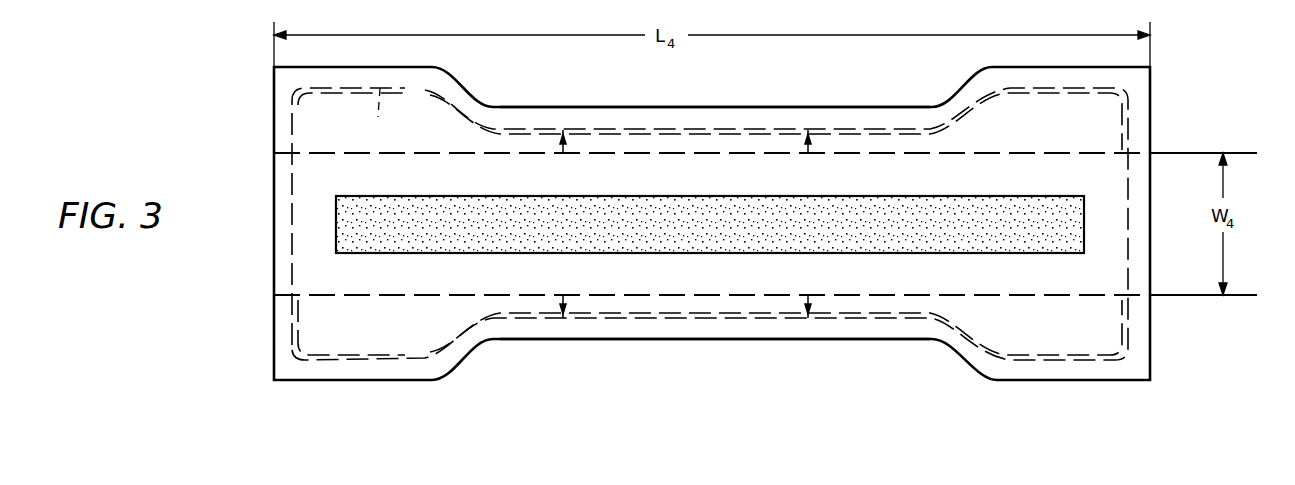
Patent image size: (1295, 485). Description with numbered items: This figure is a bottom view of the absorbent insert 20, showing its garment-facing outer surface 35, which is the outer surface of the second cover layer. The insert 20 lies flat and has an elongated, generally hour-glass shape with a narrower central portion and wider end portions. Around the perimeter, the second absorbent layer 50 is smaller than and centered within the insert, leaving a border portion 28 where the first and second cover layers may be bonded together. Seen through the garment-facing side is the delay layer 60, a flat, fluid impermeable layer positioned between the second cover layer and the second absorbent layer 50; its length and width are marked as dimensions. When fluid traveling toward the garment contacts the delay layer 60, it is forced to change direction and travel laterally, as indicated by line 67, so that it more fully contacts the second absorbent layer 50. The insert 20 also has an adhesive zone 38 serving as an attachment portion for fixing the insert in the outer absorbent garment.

The absorbent insert 20 is at (233, 106).
The border portion 28 is at (1025, 82).
The garment-facing outer surface 35 is at (612, 328).
The adhesive zone 38 is at (900, 232).
The second absorbent layer 50 is at (390, 73).
The delay layer 60 is at (590, 132).
The line indicating lateral fluid travel 67 is at (563, 148).